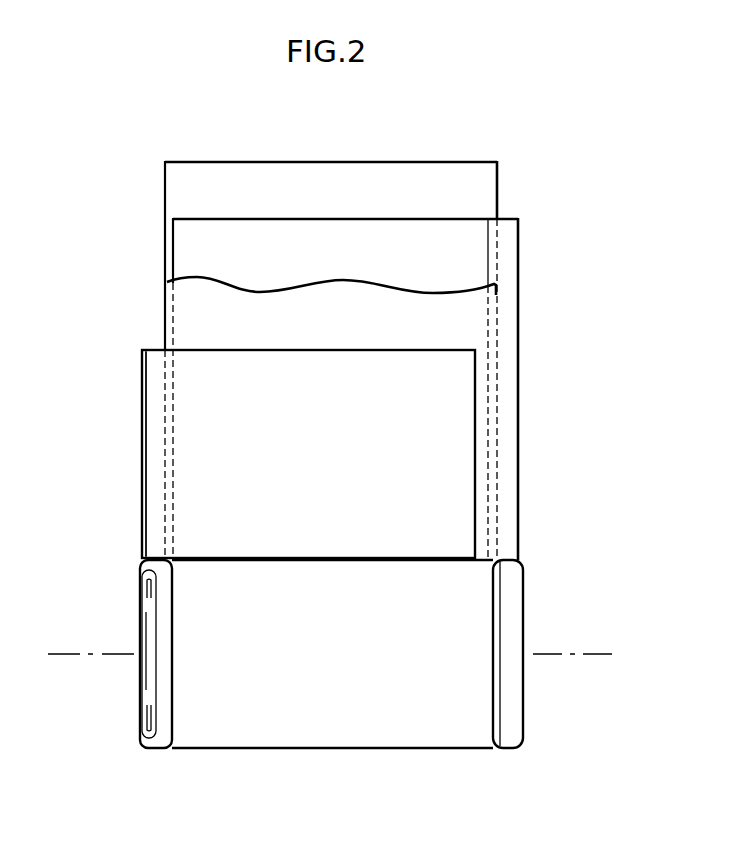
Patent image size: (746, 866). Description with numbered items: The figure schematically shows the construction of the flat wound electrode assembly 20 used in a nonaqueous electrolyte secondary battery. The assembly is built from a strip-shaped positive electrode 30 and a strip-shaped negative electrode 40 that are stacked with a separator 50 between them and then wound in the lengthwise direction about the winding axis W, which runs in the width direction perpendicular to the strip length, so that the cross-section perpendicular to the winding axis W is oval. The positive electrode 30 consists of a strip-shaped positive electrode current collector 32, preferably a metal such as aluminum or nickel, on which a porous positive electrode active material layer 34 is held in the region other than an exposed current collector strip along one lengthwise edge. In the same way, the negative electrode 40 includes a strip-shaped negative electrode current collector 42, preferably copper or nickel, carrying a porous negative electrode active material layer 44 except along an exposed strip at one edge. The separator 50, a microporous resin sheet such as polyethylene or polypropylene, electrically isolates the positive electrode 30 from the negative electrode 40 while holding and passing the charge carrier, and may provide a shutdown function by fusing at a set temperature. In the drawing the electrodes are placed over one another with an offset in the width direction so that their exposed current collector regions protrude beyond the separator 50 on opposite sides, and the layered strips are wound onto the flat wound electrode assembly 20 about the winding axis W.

The flat wound electrode assembly 20 is at (241, 727).
The strip-shaped positive electrode 30 is at (141, 370).
The positive electrode current collector 32 is at (155, 435).
The positive electrode active material layer 34 is at (243, 488).
The strip-shaped negative electrode 40 is at (521, 283).
The negative electrode current collector 42 is at (508, 410).
The negative electrode active material layer 44 is at (437, 250).
The separator 50 is at (185, 182).
The winding axis W is at (603, 654).